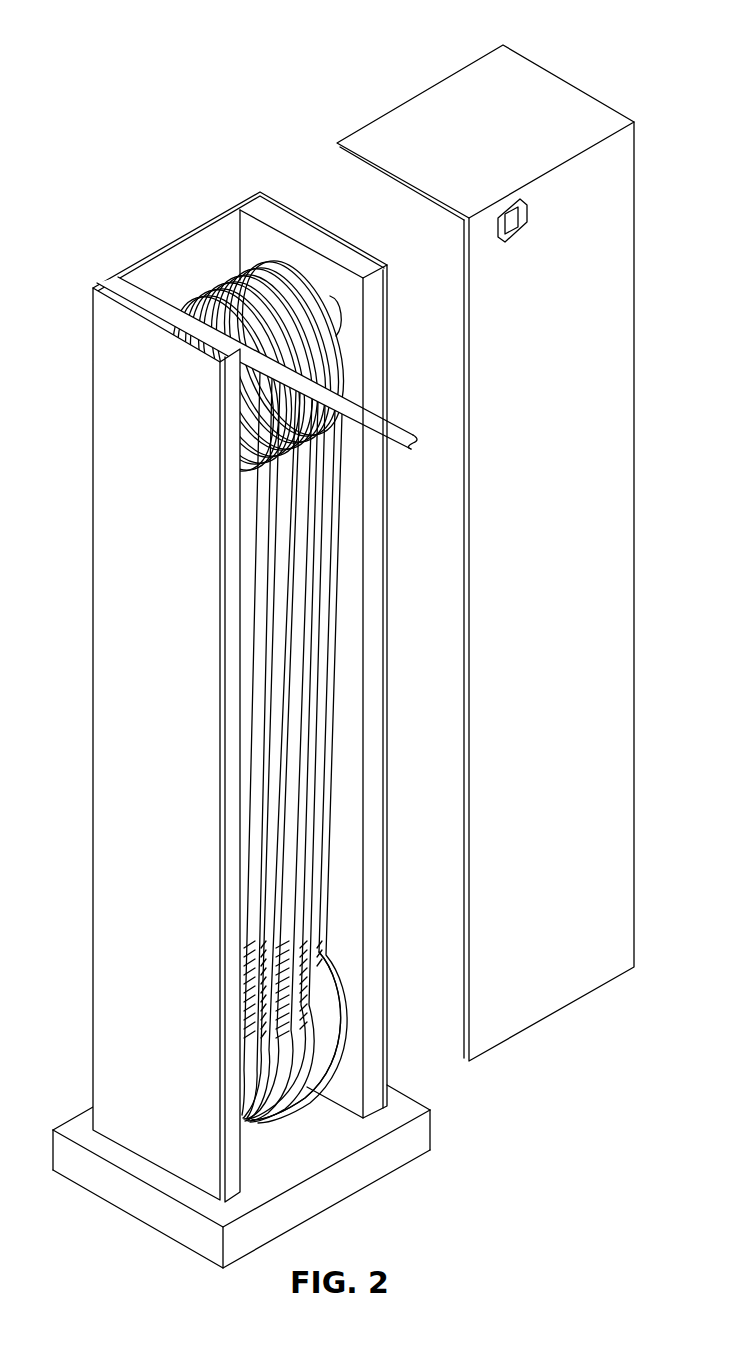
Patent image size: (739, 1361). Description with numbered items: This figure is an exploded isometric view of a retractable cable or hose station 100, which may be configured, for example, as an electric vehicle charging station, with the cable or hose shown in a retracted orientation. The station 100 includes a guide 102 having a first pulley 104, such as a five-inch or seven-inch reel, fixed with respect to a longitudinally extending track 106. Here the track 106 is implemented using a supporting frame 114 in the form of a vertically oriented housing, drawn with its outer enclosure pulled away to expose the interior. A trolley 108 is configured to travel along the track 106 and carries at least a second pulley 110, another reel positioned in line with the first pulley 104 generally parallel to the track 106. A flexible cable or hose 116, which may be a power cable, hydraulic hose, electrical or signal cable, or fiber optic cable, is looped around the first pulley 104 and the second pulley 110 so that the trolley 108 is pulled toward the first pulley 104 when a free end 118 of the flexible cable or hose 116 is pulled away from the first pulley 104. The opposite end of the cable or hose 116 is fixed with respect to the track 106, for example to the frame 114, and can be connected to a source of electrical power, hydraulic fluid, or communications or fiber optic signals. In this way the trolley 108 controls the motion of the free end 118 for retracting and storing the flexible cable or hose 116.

The retractable cable or hose station 100 is at (460, 22).
The guide 102 is at (231, 245).
The first pulley 104 is at (213, 290).
The longitudinally extending track 106 is at (370, 690).
The trolley 108 is at (337, 960).
The second pulley 110 is at (340, 1027).
The supporting frame 114 is at (92, 692).
The flexible cable or hose 116 is at (316, 823).
The free end 118 is at (396, 432).